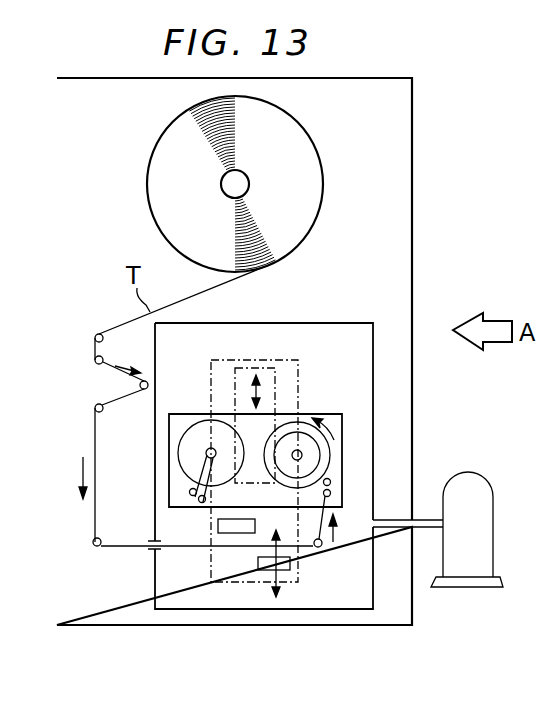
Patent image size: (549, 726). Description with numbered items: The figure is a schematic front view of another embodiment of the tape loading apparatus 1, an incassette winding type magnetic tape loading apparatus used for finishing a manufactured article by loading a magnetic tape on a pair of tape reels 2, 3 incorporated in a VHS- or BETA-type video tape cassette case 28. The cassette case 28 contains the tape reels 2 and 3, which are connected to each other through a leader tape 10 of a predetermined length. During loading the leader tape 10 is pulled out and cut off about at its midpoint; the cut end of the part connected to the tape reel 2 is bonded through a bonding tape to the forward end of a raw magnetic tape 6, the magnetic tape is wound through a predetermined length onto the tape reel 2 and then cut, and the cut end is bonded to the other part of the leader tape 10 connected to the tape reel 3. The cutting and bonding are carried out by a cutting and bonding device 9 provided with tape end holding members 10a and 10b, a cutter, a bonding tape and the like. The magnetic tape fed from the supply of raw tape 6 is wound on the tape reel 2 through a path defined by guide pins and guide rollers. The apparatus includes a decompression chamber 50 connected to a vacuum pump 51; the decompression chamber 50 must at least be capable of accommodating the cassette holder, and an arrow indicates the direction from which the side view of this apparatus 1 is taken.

The loading apparatus 1 is at (414, 155).
The tape reel 2 is at (330, 452).
The tape reel 3 is at (170, 445).
The raw magnetic tape 6 is at (324, 170).
The cutting and bonding device 9 is at (302, 368).
The leader tape 10 is at (197, 505).
The tape end holding member 10a is at (233, 533).
The tape end holding member 10b is at (290, 563).
The cassette case 28 is at (343, 482).
The decompression chamber 50 is at (363, 323).
The vacuum pump 51 is at (485, 519).